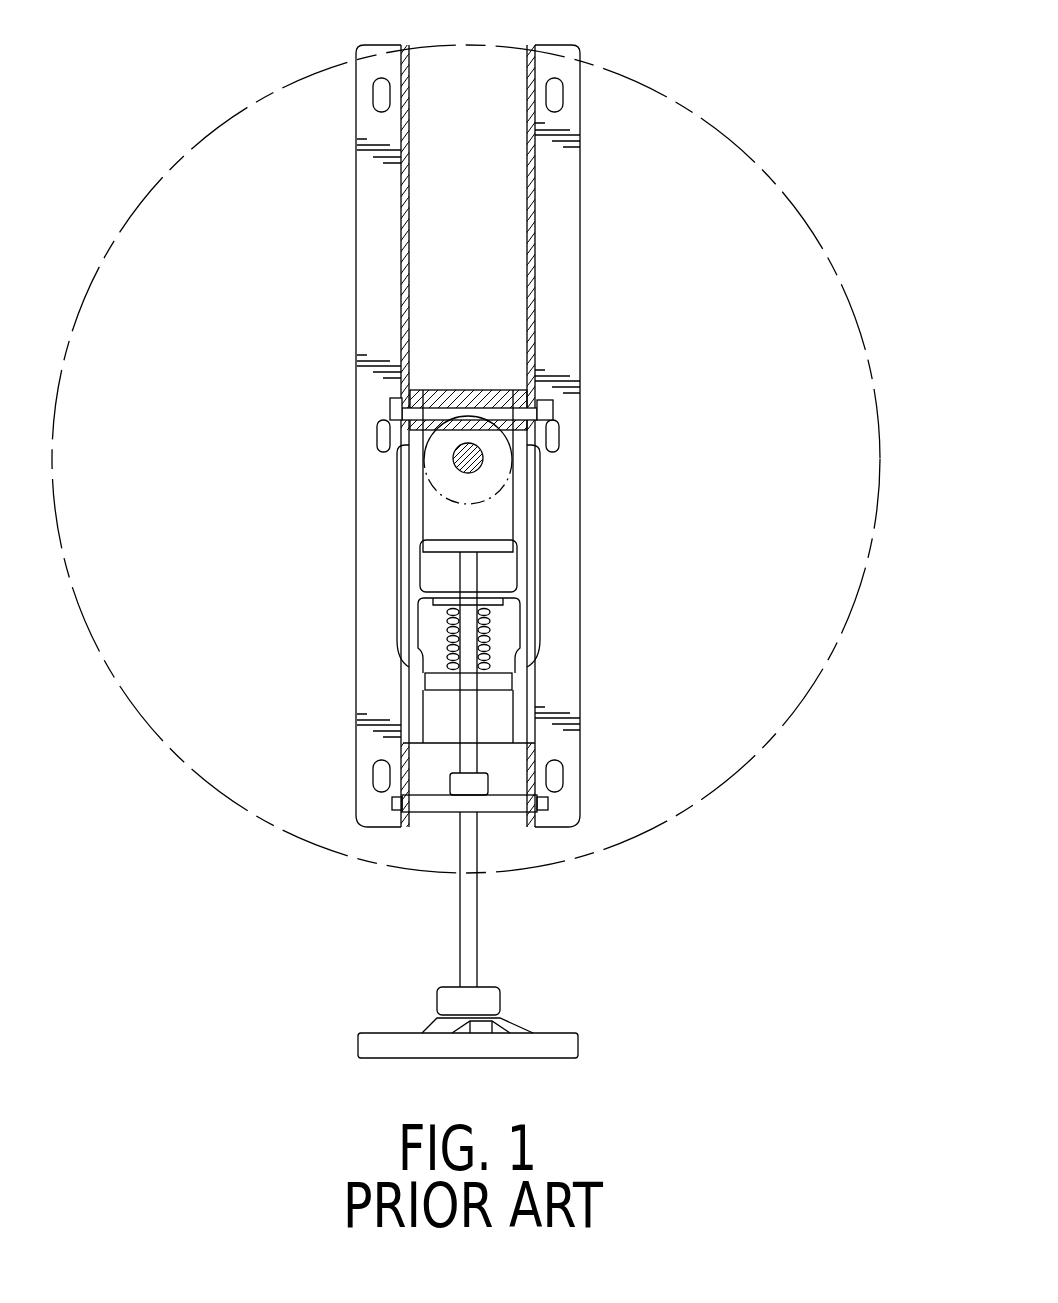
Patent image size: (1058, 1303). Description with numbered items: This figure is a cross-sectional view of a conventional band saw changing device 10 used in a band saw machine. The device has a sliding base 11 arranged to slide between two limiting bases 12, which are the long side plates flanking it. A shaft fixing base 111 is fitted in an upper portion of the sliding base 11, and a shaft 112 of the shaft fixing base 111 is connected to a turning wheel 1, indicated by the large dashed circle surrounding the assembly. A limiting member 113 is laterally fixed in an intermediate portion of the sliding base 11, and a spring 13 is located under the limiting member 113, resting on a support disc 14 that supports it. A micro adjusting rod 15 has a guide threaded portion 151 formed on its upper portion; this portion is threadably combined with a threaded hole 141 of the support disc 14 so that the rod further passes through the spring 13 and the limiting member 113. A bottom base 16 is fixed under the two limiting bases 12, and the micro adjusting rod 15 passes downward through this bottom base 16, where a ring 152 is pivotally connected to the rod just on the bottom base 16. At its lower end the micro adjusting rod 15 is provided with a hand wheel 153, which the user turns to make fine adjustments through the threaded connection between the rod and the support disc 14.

The turning wheel 1 is at (808, 217).
The band saw changing device 10 is at (397, 528).
The sliding base 11 is at (522, 488).
The shaft fixing base 111 is at (490, 522).
The shaft 112 is at (453, 467).
The limiting member 113 is at (500, 583).
The limiting bases 12 is at (371, 250).
The spring 13 is at (487, 625).
The support disc 14 is at (433, 682).
The threaded hole 141 is at (512, 680).
The micro adjusting rod 15 is at (465, 910).
The guide threaded portion 151 is at (460, 570).
The ring 152 is at (460, 785).
The hand wheel 153 is at (572, 1046).
The bottom base 16 is at (497, 808).